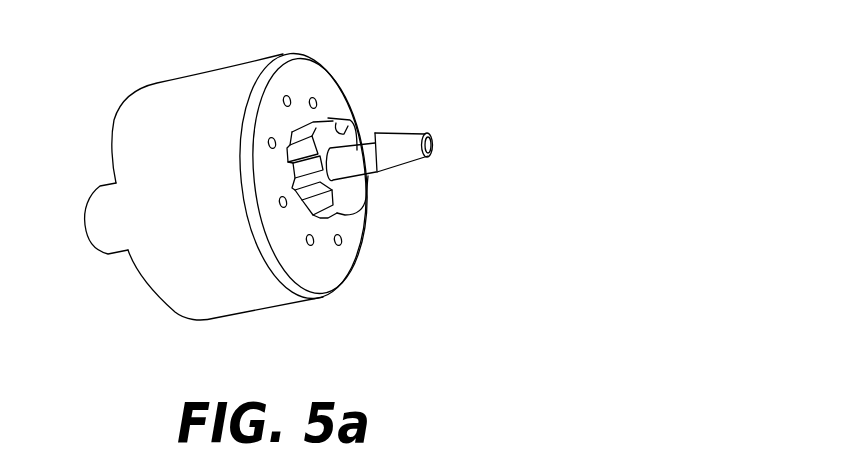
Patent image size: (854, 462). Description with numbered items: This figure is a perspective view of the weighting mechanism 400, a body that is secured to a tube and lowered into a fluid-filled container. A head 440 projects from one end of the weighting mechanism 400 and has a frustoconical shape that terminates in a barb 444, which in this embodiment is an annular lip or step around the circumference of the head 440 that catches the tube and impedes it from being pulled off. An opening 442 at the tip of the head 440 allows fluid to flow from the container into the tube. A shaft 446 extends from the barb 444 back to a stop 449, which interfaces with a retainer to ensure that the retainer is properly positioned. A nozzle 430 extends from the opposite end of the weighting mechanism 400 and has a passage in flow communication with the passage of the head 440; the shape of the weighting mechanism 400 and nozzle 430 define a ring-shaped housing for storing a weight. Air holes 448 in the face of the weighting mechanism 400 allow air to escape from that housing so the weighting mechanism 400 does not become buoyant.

The weighting mechanism 400 is at (306, 316).
The nozzle 430 is at (95, 248).
The head 440 is at (424, 155).
The opening 442 is at (433, 142).
The barb 444 is at (375, 133).
The shaft 446 is at (371, 176).
The air holes 448 is at (289, 97).
The stop 449 is at (330, 115).